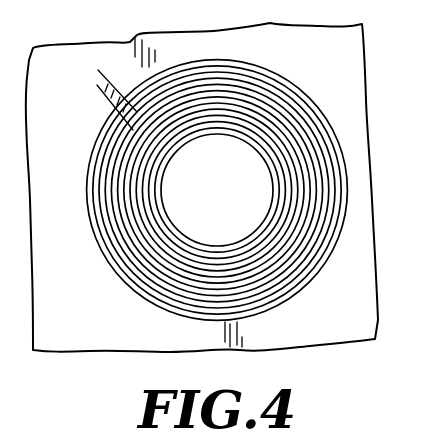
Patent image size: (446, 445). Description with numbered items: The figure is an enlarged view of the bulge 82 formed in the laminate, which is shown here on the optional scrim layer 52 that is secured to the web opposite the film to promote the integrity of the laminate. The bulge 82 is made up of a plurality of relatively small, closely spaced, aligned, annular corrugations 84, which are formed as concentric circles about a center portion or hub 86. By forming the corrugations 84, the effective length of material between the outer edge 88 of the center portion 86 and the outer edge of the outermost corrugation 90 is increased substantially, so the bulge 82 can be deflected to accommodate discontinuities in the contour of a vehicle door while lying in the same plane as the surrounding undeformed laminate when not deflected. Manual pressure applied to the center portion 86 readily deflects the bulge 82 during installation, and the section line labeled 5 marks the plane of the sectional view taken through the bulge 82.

The scrim layer 52 is at (82, 340).
The bulge 82 is at (262, 199).
The corrugations 84 is at (98, 95).
The center portion 86 is at (247, 223).
The outer edge of the center portion 88 is at (237, 137).
The outermost corrugation 90 is at (336, 133).
The section line 5- 5 is at (53, 148).